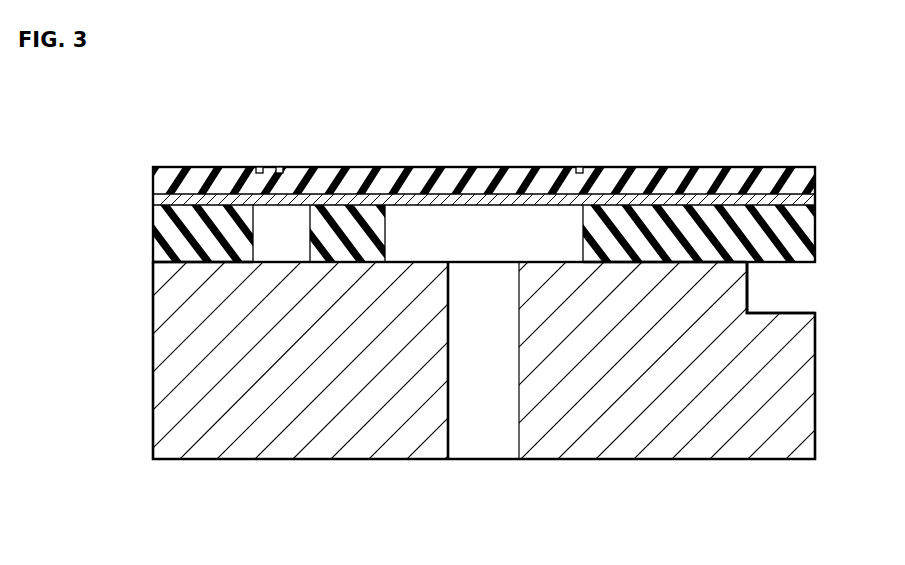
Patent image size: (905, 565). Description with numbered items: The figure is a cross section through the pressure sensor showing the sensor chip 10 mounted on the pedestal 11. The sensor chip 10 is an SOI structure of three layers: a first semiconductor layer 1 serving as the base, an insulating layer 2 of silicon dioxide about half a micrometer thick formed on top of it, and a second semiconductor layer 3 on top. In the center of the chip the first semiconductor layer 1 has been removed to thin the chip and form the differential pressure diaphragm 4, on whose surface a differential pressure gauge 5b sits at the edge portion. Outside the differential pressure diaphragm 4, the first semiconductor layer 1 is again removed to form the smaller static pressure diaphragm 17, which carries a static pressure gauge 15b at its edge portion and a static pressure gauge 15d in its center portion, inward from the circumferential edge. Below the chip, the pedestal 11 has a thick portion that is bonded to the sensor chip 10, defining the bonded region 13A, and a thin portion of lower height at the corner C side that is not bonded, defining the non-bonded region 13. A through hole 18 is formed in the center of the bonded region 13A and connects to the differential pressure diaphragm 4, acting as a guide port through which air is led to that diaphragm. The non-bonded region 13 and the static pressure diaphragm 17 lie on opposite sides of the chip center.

The first semiconductor layer 1 is at (160, 238).
The insulating layer 2 is at (162, 200).
The second semiconductor layer 3 is at (165, 183).
The differential pressure diaphragm 4 is at (585, 157).
The differential pressure gauge 5b is at (585, 166).
The sensor chip 10 is at (441, 213).
The pedestal 11 is at (190, 420).
The non-bonded region 13 is at (792, 299).
The bonded region 13A is at (202, 264).
The static pressure gauge 15b is at (258, 167).
The static pressure gauge 15d is at (284, 168).
The static pressure diaphragm 17 is at (308, 158).
The through hole 18 is at (449, 419).